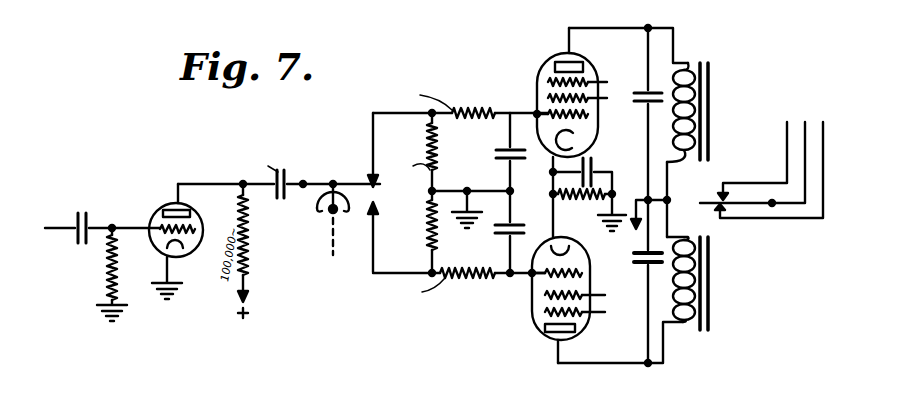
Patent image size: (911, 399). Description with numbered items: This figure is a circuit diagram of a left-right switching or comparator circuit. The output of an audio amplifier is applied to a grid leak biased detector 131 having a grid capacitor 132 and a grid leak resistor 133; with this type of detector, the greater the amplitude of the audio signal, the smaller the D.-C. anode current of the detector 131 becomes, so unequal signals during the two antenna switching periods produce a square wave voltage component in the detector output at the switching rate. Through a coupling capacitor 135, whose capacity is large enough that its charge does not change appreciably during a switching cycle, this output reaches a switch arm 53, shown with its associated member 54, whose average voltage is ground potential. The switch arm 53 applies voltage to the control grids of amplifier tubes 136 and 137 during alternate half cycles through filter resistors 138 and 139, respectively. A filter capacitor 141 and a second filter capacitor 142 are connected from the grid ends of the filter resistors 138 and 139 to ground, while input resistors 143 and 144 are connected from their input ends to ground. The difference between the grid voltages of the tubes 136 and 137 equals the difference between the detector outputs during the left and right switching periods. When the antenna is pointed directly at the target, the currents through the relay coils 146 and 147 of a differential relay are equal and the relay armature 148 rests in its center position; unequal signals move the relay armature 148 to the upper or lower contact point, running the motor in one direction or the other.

The grid leak biased detector 131 is at (151, 215).
The grid capacitor 132 is at (79, 214).
The grid leak resistor 133 is at (108, 268).
The coupling capacitor 135 is at (277, 201).
The amplifier tube 136 is at (590, 70).
The amplifier tube 137 is at (575, 339).
The filter resistor 138 is at (488, 108).
The filter resistor 139 is at (470, 278).
The filter capacitor 141 is at (500, 149).
The coupling capacitor 142 is at (490, 238).
The input resistor 143 is at (427, 146).
The input resistor 144 is at (428, 252).
The relay coil 146 is at (692, 62).
The relay coil 147 is at (690, 326).
The relay armature 148 is at (700, 202).
The switch arm 53 is at (360, 184).
The pickup connection 54 is at (321, 218).